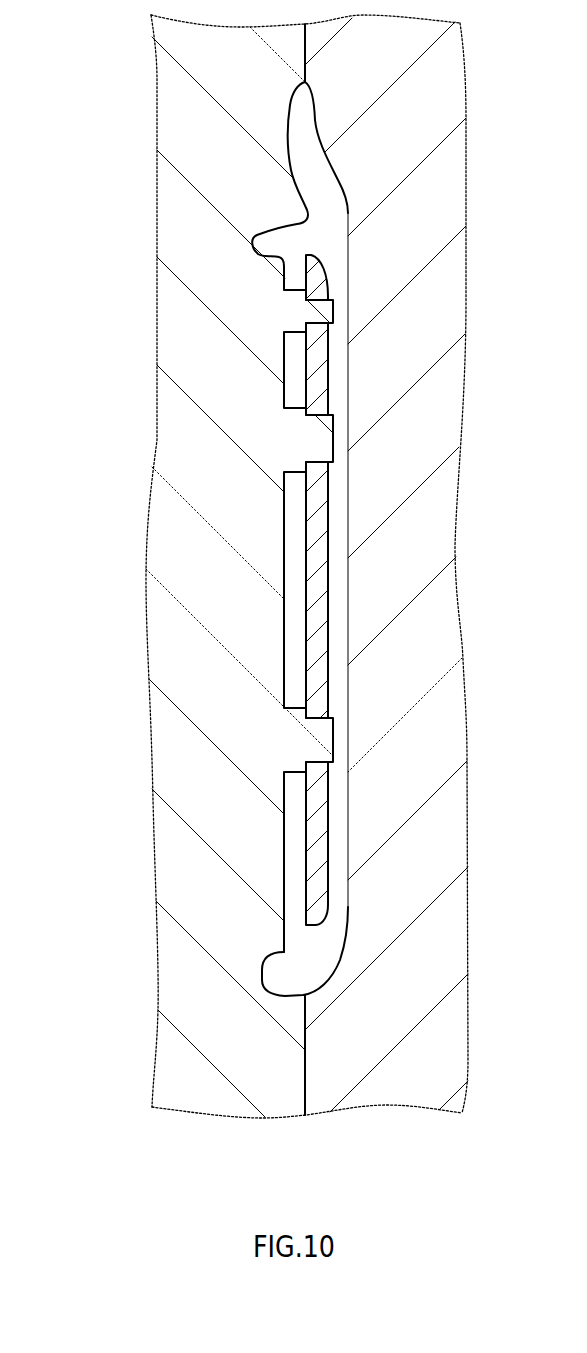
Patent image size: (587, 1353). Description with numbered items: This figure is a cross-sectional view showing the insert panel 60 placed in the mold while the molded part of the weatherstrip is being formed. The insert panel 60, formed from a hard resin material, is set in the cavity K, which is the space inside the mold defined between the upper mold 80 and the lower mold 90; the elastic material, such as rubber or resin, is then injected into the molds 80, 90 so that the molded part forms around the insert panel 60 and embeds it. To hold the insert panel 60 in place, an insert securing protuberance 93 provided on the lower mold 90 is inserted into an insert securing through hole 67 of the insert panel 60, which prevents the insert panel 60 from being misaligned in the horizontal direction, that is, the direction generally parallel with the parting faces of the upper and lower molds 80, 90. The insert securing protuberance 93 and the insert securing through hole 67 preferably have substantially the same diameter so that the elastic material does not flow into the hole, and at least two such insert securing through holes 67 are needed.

The lower mold 90 is at (138, 80).
The upper mold 80 is at (473, 68).
The insert panel 60 is at (348, 594).
The insert securing through hole 67 is at (328, 283).
The insert securing protuberance 93 is at (306, 308).
The cavity K is at (322, 182).